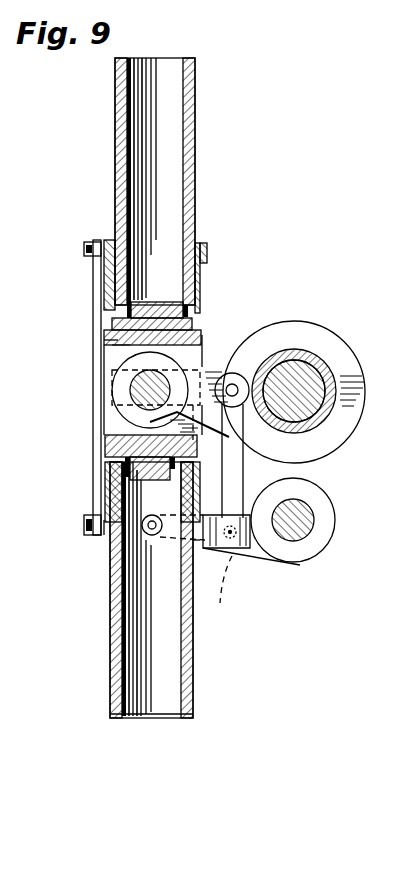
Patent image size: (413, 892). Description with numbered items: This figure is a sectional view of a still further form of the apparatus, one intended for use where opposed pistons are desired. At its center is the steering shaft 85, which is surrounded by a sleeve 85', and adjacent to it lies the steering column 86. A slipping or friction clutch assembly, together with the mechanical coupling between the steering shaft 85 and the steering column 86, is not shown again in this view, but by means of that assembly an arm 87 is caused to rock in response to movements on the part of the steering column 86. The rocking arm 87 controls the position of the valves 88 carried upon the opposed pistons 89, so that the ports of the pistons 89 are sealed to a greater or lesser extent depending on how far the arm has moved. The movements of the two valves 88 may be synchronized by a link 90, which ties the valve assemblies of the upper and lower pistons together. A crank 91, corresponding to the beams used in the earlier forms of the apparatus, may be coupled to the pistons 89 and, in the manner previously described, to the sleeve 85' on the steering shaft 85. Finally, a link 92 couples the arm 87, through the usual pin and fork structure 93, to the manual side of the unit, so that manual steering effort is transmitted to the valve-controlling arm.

The steering shaft 85 is at (285, 383).
The sleeve 85' is at (294, 360).
The steering column 86 is at (300, 522).
The arm 87 is at (253, 556).
The valves 88 is at (100, 240).
The pistons 89 is at (115, 153).
The link 90 is at (104, 345).
The crank 91 is at (160, 352).
The link 92 is at (232, 478).
The pin and fork structure 93 is at (231, 592).